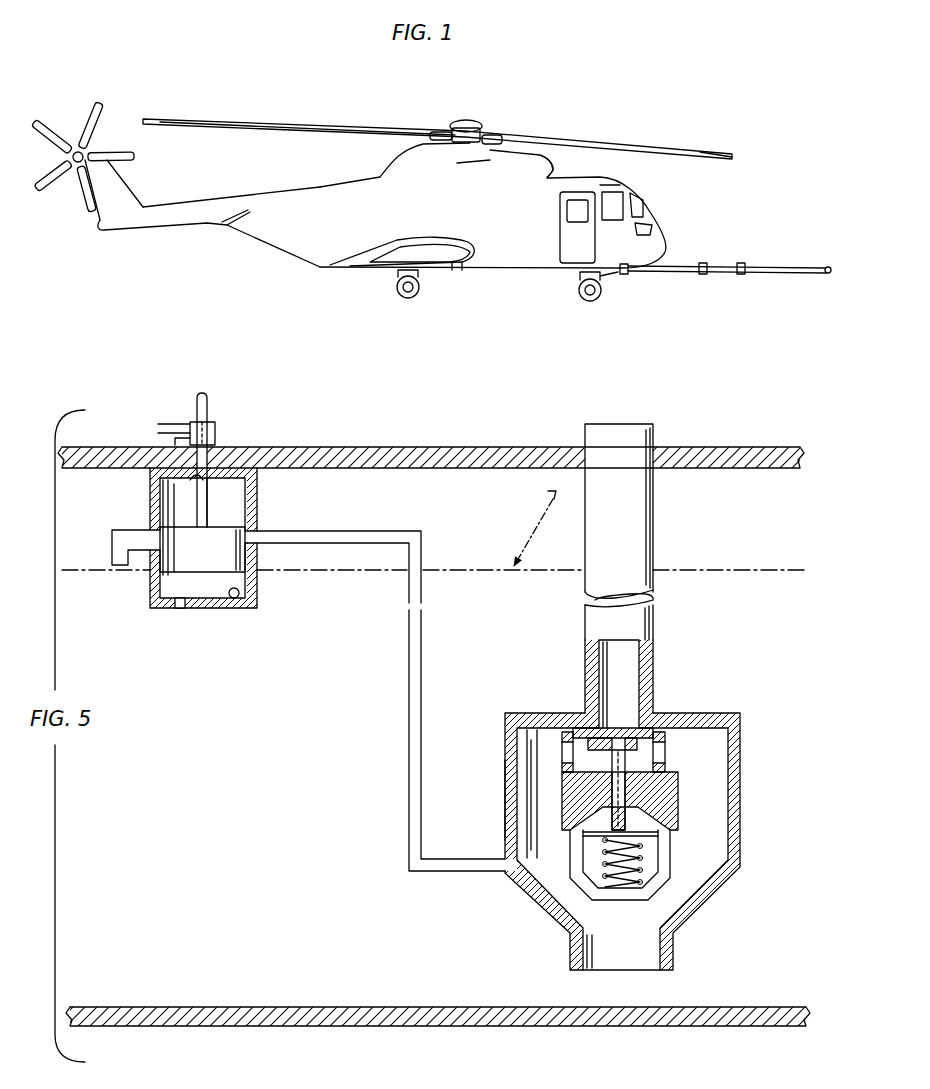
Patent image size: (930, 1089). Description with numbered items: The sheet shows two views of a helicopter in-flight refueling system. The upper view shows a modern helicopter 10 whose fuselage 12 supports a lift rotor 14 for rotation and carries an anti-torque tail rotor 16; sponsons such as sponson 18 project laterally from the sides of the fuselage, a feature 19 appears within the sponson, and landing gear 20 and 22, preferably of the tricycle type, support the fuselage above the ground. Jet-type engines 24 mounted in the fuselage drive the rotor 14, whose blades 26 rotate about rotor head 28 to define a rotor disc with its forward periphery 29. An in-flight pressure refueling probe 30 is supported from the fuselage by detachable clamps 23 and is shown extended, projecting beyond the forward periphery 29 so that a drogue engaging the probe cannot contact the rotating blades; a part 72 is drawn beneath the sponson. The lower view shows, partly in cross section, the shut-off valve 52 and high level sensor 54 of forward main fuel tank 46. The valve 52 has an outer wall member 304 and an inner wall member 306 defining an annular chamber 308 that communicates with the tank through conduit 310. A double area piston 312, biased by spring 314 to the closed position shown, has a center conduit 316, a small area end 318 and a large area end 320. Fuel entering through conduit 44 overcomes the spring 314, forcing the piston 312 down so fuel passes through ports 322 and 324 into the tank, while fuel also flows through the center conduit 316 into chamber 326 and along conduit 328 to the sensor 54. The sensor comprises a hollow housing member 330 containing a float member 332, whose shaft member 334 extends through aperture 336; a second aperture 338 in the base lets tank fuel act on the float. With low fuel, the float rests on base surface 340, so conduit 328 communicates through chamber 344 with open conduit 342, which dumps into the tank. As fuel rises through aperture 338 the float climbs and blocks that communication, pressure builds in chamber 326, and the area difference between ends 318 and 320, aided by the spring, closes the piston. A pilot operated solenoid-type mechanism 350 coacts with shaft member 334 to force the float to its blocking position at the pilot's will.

In FIG. 1, the helicopter 10 is at (548, 103).
In FIG. 1, the fuselage 12 is at (338, 188).
In FIG. 1, the lift rotor 14 is at (618, 144).
In FIG. 1, the anti-torque tail rotor 16 is at (93, 107).
In FIG. 1, the sponson 18 is at (460, 241).
In FIG. 1, the sponson fuel cell 19 is at (426, 243).
In FIG. 1, the landing gear 20 is at (397, 289).
In FIG. 1, the landing gear 22 is at (603, 291).
In FIG. 1, the detachable clamp 23 is at (628, 273).
In FIG. 1, the jet-type engine 24 is at (548, 163).
In FIG. 1, the rotor blade 26 is at (353, 124).
In FIG. 1, the rotor head 28 is at (470, 121).
In FIG. 1, the rotor disc periphery 29 is at (740, 156).
In FIG. 1, the in-flight pressure refueling probe 30 is at (780, 268).
In FIG. 1, the strut 72 is at (463, 268).
In FIG. 5, the conduit 44 is at (627, 455).
In FIG. 5, the forward main fuel tank 46 is at (322, 764).
In FIG. 5, the shut-off valve 52 is at (744, 793).
In FIG. 5, the high level sensor 54 is at (260, 509).
In FIG. 5, the outer wall member 304 is at (512, 826).
In FIG. 5, the inner wall member 306 is at (672, 813).
In FIG. 5, the annular chamber 308 is at (532, 752).
In FIG. 5, the conduit 310 is at (650, 954).
In FIG. 5, the double area piston 312 is at (654, 741).
In FIG. 5, the spring 314 is at (642, 862).
In FIG. 5, the center conduit 316 is at (626, 793).
In FIG. 5, the small area end 318 is at (640, 730).
In FIG. 5, the large area end 320 is at (660, 836).
In FIG. 5, the port 322 is at (566, 761).
In FIG. 5, the port 324 is at (672, 763).
In FIG. 5, the chamber 326 is at (656, 880).
In FIG. 5, the conduit 328 is at (368, 531).
In FIG. 5, the hollow housing member 330 is at (153, 510).
In FIG. 5, the float member 332 is at (212, 556).
In FIG. 5, the shaft member 334 is at (198, 464).
In FIG. 5, the aperture 336 is at (192, 483).
In FIG. 5, the second aperture 338 is at (200, 603).
In FIG. 5, the base surface 340 is at (237, 598).
In FIG. 5, the conduit 342 is at (113, 553).
In FIG. 5, the chamber 344 is at (243, 505).
In FIG. 5, the solenoid-type mechanism 350 is at (216, 432).